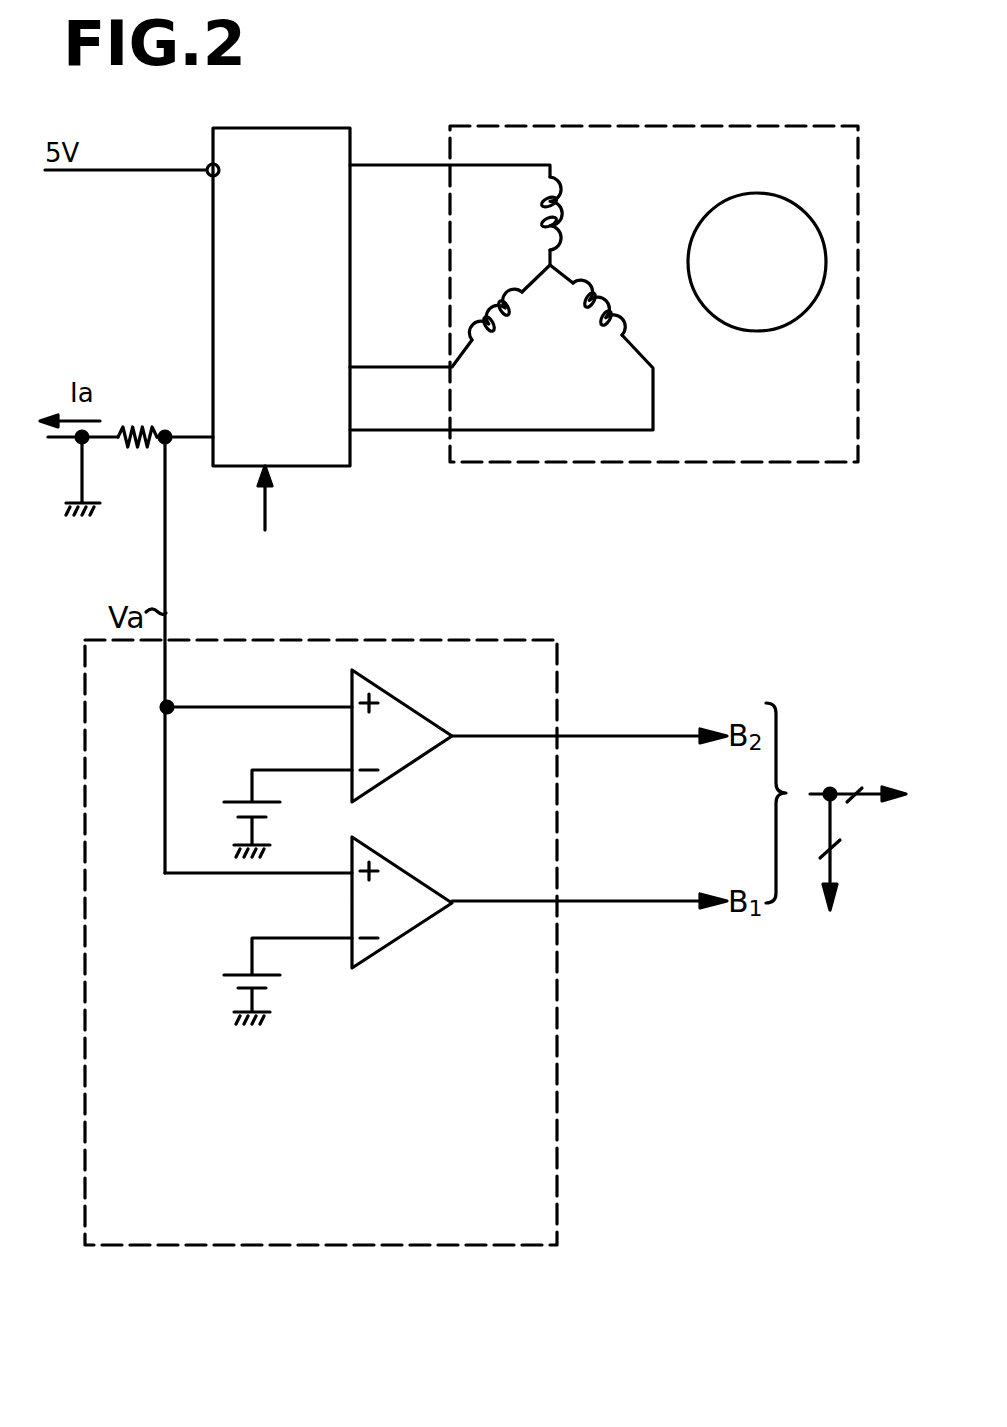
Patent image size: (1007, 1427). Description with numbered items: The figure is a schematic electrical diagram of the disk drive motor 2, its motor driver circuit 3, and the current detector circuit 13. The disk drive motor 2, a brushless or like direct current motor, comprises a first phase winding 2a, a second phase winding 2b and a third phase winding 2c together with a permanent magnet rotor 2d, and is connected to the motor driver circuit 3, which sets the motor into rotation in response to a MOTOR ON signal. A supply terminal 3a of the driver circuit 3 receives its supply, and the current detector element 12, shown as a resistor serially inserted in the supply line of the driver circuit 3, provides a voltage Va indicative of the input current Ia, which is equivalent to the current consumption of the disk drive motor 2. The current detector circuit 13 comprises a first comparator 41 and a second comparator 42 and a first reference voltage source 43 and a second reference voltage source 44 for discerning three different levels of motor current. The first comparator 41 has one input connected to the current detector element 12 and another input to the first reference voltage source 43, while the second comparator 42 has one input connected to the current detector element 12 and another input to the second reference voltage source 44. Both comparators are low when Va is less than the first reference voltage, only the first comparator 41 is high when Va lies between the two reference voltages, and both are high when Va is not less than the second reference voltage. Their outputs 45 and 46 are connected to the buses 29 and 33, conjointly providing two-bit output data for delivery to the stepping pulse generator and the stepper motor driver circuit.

The disk drive motor 2 is at (450, 160).
The first phase winding 2a is at (564, 212).
The second phase winding 2b is at (608, 320).
The third phase winding 2c is at (506, 288).
The permanent magnet rotor 2d is at (722, 321).
The motor driver circuit 3 is at (352, 255).
The supply terminal 3a is at (208, 164).
The current detector element 12 is at (128, 428).
The current detector circuit 13 is at (557, 718).
The bus 29 is at (834, 862).
The bus 33 is at (854, 800).
The first comparator 41 is at (426, 936).
The second comparator 42 is at (406, 706).
The first reference voltage source 43 is at (244, 975).
The second reference voltage source 44 is at (240, 800).
The output 45 is at (646, 904).
The output 46 is at (632, 738).